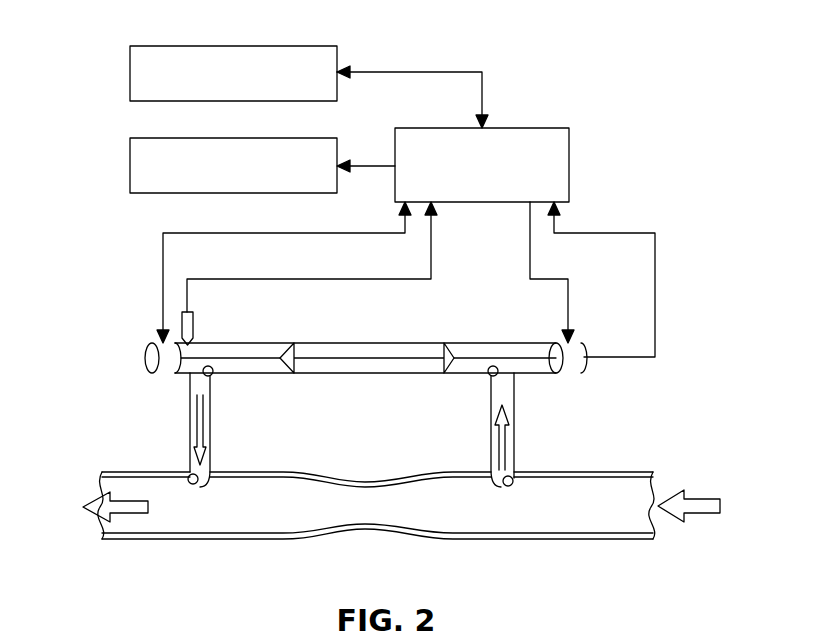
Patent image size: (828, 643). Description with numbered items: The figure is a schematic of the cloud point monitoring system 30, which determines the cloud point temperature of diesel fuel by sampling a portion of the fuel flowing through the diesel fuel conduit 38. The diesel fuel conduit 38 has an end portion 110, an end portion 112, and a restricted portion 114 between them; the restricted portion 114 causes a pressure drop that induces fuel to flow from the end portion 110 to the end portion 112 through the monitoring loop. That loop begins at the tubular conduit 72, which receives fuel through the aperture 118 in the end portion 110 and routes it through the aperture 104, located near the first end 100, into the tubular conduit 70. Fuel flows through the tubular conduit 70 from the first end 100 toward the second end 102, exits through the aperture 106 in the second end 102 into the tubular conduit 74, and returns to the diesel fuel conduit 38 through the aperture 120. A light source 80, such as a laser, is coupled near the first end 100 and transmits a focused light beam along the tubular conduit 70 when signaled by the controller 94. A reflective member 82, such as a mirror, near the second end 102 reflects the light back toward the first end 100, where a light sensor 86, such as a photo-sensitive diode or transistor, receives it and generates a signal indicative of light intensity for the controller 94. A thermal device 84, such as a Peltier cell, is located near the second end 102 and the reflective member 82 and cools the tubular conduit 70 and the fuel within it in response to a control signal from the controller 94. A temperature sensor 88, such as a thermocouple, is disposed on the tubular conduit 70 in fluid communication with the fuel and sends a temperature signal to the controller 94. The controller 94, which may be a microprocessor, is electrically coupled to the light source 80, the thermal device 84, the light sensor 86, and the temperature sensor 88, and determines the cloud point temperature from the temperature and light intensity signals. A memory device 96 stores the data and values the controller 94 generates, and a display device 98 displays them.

The cloud point monitoring system 30 is at (604, 74).
The diesel fuel conduit 38 is at (624, 465).
The tubular conduit 70 is at (376, 330).
The tubular conduit 72 is at (517, 423).
The tubular conduit 74 is at (186, 404).
The light source 80 is at (581, 343).
The reflective member 82 is at (172, 342).
The thermal device 84 is at (146, 357).
The light sensor 86 is at (578, 366).
The temperature sensor 88 is at (194, 327).
The controller 94 is at (569, 163).
The memory device 96 is at (130, 70).
The display device 98 is at (130, 163).
The first end 100 is at (549, 375).
The second end 102 is at (189, 375).
The aperture 104 is at (490, 376).
The aperture 106 is at (212, 375).
The end portion 110 is at (607, 542).
The end portion 112 is at (206, 542).
The restricted portion 114 is at (366, 532).
The aperture 118 is at (505, 483).
The aperture 120 is at (200, 482).